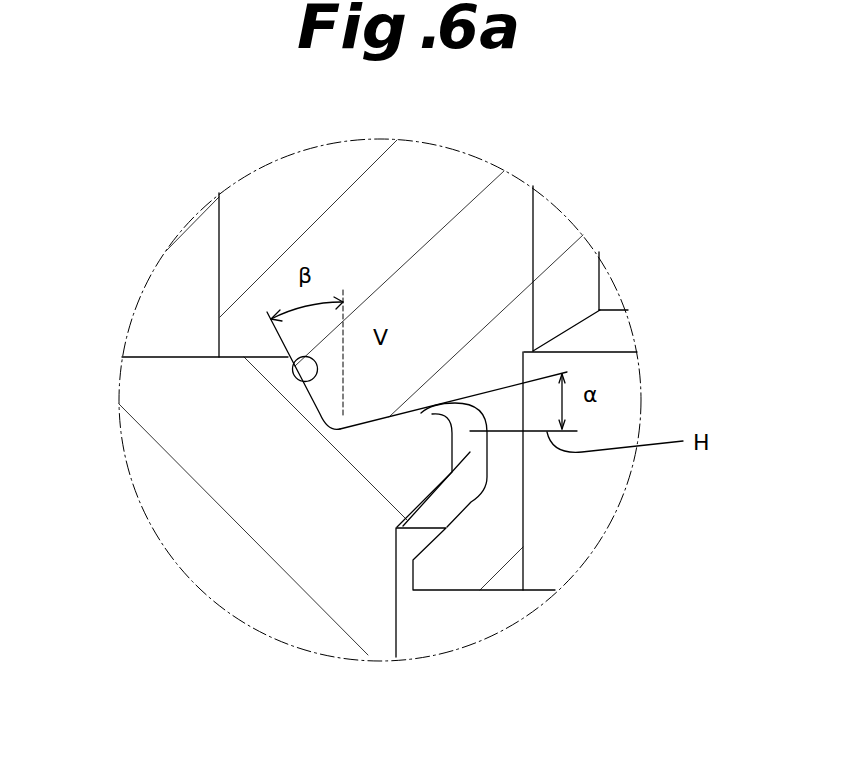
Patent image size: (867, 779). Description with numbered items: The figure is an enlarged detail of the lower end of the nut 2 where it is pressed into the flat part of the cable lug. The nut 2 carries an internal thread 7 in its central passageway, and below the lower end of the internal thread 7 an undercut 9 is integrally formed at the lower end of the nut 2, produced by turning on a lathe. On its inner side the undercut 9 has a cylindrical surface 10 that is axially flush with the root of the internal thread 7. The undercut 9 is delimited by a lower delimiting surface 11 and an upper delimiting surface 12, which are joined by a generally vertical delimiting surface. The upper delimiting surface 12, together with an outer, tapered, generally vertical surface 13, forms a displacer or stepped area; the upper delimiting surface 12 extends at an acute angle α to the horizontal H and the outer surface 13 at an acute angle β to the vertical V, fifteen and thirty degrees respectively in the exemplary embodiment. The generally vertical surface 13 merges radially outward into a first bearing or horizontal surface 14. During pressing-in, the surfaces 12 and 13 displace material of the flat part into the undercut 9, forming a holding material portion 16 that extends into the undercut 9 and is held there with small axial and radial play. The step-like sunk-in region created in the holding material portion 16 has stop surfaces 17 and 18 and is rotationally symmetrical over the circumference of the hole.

The nut 2 is at (288, 212).
The internal thread 7 is at (567, 265).
The undercut 9 is at (400, 522).
The cylindrical surface 10 is at (527, 473).
The lower delimiting surface 11 is at (446, 528).
The upper delimiting surface 12 is at (418, 410).
The outer generally vertical surface 13 is at (320, 383).
The first bearing or horizontal surface 14 is at (288, 358).
The holding material portion 16 is at (417, 450).
The stop surface 17 is at (377, 418).
The stop surface 18 is at (293, 359).